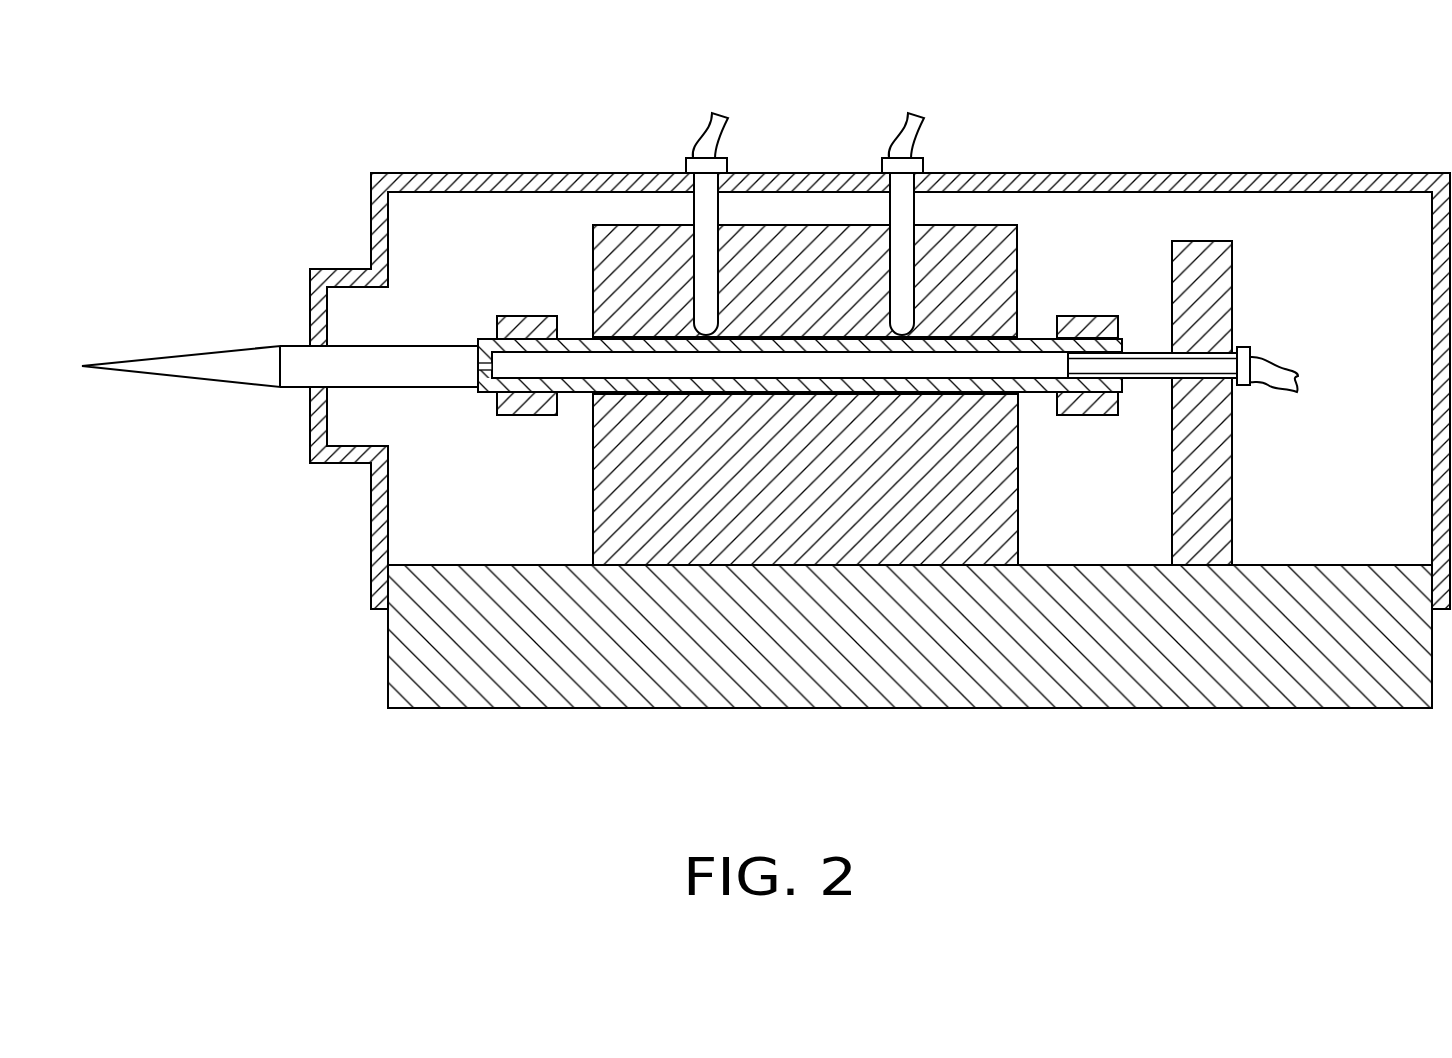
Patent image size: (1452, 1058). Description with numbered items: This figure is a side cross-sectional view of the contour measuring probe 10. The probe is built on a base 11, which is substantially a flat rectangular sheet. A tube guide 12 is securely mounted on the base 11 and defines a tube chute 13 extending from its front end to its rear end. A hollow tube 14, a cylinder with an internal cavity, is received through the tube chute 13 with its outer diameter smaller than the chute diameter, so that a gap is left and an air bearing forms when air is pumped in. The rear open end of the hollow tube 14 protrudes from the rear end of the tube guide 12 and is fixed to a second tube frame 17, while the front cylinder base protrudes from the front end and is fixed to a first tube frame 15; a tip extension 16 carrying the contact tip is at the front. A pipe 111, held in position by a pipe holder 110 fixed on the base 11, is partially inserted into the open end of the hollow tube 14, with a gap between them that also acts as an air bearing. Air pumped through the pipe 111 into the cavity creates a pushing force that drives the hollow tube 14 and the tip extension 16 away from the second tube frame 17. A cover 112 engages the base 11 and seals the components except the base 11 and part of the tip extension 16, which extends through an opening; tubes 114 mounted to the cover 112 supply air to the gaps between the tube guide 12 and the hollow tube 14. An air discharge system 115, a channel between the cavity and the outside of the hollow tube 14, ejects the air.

The contour measuring probe 10 is at (382, 129).
The base 11 is at (1339, 683).
The tube guide 12 is at (723, 495).
The tube chute 13 is at (882, 393).
The hollow tube 14 is at (960, 387).
The first tube frame 15 is at (552, 410).
The tip extension 16 is at (365, 365).
The second tube frame 17 is at (1085, 327).
The pipe holder 110 is at (1200, 257).
The pipe 111 is at (1143, 380).
The cover 112 is at (623, 173).
The tube 114 is at (705, 268).
The air discharge system 115 is at (468, 396).